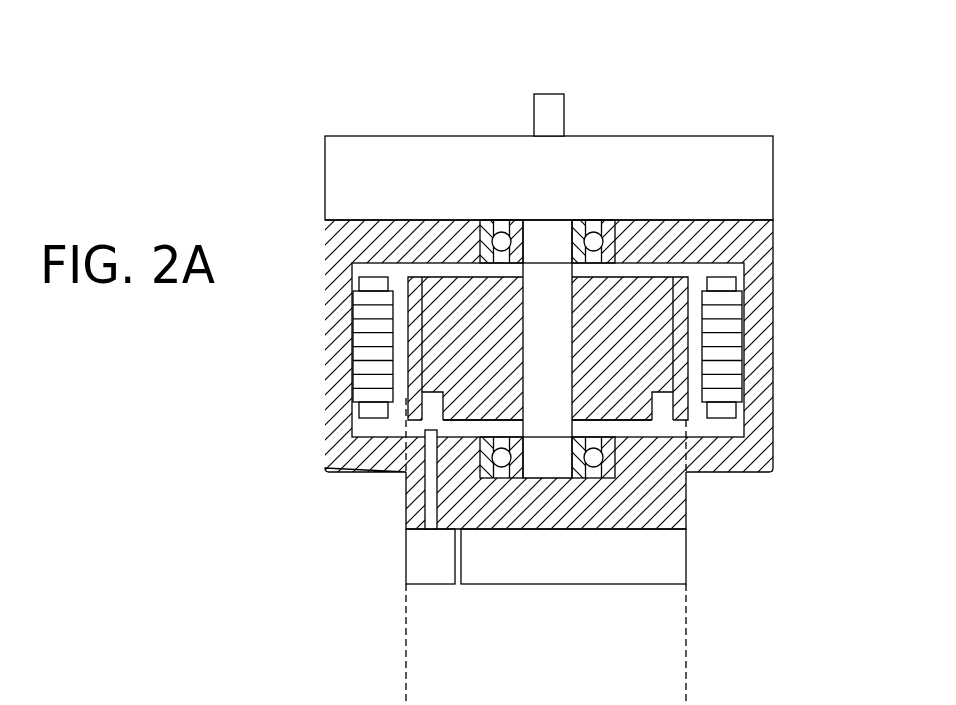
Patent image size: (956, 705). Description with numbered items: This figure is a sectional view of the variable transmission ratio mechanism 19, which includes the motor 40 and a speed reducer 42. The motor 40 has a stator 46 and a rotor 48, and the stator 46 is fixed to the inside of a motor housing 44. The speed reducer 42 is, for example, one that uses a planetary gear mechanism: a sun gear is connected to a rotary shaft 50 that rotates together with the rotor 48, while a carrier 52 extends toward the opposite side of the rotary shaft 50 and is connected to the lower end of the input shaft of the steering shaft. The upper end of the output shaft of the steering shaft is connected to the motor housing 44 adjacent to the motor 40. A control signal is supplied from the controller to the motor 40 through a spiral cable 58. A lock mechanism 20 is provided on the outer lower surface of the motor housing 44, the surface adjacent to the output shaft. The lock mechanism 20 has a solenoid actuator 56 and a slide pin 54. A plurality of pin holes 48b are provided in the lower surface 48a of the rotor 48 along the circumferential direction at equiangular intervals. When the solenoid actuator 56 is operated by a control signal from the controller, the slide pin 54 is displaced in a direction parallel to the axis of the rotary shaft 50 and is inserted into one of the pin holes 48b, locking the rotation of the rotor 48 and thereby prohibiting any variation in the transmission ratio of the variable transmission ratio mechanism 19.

The variable transmission ratio mechanism 19 is at (569, 31).
The lock mechanism 20 is at (343, 508).
The motor 40 is at (313, 328).
The speed reducer 42 is at (325, 181).
The motor housing 44 is at (337, 463).
The stator 46 is at (370, 393).
The rotor 48 is at (433, 381).
The lower surface 48a is at (623, 423).
The pin holes 48b is at (435, 407).
The rotary shaft 50 is at (557, 468).
The carrier 52 is at (566, 114).
The slide pin 54 is at (410, 506).
The solenoid actuator 56 is at (413, 554).
The spiral cable 58 is at (525, 575).